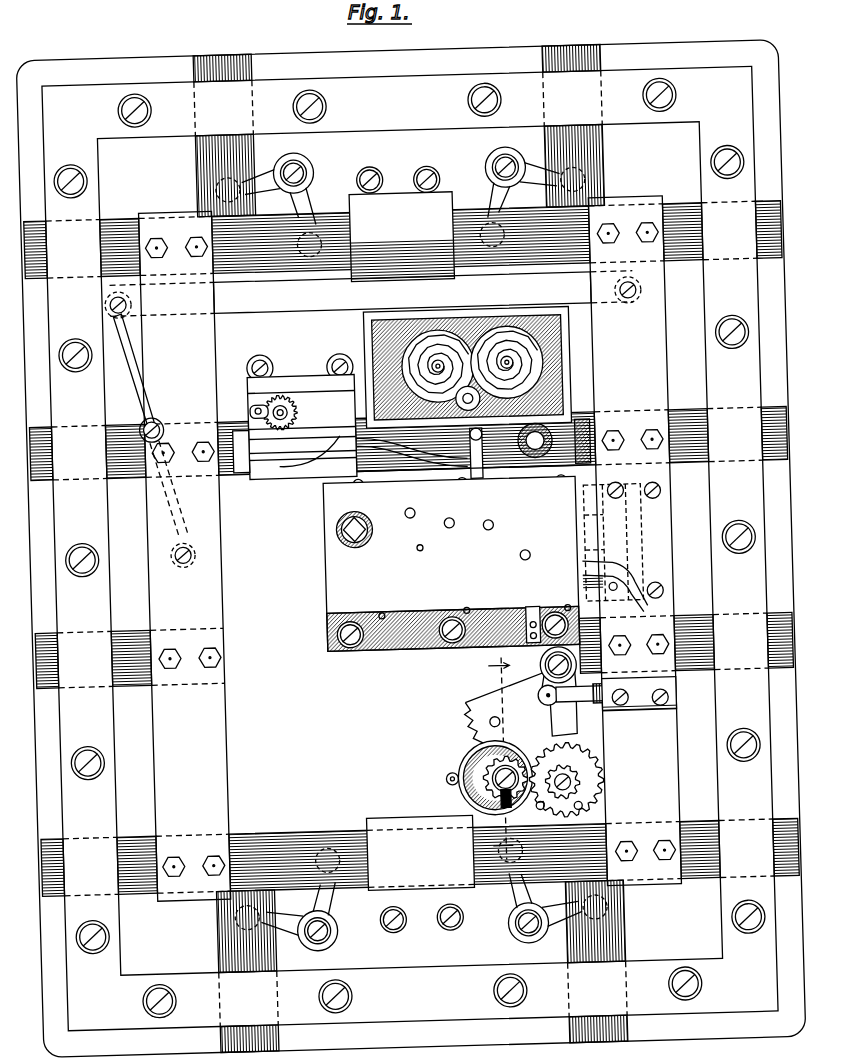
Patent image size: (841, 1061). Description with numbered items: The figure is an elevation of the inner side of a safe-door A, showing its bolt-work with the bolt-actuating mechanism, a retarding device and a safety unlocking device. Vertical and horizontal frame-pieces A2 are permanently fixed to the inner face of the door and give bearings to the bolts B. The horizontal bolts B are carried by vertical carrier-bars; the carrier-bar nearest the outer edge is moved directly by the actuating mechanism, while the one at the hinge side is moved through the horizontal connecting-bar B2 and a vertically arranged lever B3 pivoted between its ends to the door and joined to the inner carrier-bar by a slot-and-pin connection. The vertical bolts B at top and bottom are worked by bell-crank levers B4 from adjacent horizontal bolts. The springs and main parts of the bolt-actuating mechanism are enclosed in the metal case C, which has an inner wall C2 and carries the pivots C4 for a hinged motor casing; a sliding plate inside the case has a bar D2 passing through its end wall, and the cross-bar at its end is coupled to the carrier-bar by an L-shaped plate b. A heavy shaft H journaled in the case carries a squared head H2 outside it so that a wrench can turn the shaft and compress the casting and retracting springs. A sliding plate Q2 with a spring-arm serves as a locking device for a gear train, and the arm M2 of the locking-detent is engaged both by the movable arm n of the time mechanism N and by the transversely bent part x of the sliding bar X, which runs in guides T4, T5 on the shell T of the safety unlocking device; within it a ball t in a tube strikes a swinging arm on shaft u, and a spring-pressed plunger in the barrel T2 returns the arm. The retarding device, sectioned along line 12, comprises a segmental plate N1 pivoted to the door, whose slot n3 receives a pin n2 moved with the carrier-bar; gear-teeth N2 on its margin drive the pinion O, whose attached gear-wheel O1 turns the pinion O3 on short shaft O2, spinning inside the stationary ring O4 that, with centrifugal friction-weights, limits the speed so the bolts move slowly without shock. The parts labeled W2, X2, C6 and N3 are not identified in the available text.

The safe-door A is at (411, 549).
The frame-pieces A2 is at (410, 548).
The bolts B is at (207, 162).
The horizontal connecting-bar B2 is at (391, 549).
The vertically-arranged lever B3 is at (141, 372).
The bell-crank levers B4 is at (310, 194).
The shell or casing T is at (302, 416).
The ratchet wheel W2 is at (262, 404).
The horizontal shaft u is at (296, 402).
The longitudinally-sliding bar X is at (302, 443).
The slide bar rail X2 is at (303, 468).
The guide T4 is at (238, 468).
The guide T5 is at (316, 456).
The time mechanism N is at (467, 368).
The cylinder or barrel T2 is at (412, 447).
The movable arm n is at (472, 434).
The ball or roller t is at (553, 442).
The sliding plate Q2 is at (464, 482).
The arm of the locking-detent M2 is at (474, 488).
The transversely-bent part x is at (532, 486).
The metal box or case C is at (438, 573).
The inner wall of the case C2 is at (473, 561).
The pivots C4 is at (330, 615).
The clip C6 is at (531, 610).
The heavy shaft H is at (366, 535).
The squared head H2 is at (368, 527).
The section line 12 is at (505, 753).
The gear-teeth N2 is at (498, 712).
The pinion O3 is at (470, 764).
The gear-wheel O1 is at (466, 838).
The short rotating shaft O2 is at (470, 797).
The pinion O is at (575, 784).
The stationary ring O4 is at (450, 770).
The segmental plate N1 is at (545, 672).
The stud or pin n2 is at (535, 699).
The slot or opening n3 is at (548, 710).
The bracket N3 is at (639, 694).
The bar of the sliding plate D2 is at (600, 604).
The L-shaped plate b is at (623, 541).